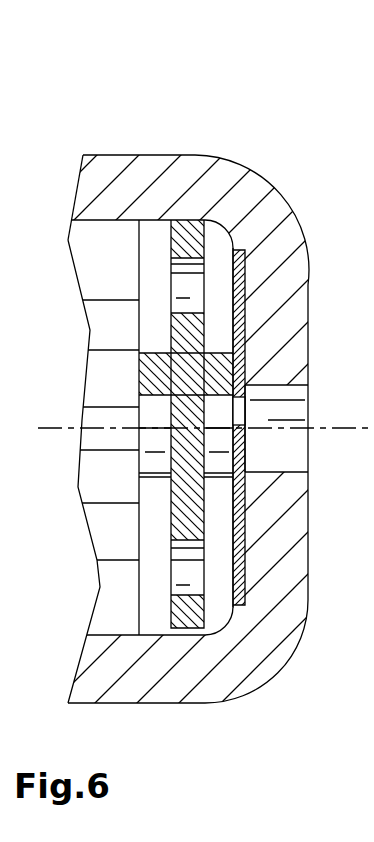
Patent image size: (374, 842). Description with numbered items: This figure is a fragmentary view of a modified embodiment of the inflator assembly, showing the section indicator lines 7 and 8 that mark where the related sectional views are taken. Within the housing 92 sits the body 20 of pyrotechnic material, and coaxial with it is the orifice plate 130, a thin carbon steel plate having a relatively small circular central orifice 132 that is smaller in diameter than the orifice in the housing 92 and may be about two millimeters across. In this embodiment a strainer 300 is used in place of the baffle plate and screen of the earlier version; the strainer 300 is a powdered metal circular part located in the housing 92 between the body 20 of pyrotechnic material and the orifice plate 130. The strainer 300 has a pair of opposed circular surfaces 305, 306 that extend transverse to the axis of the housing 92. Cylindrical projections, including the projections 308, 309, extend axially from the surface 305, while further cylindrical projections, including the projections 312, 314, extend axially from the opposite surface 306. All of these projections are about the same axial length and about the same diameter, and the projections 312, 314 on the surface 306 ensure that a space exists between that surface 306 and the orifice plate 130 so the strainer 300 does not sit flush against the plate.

The section line 7- 7 is at (135, 145).
The section line 8- 8 is at (232, 72).
The body of pyrotechnic material 20 is at (110, 328).
The housing 92 is at (250, 648).
The orifice plate 130 is at (243, 302).
The central orifice 132 is at (242, 437).
The strainer 300 is at (206, 237).
The circular surface 305 is at (111, 583).
The circular surface 306 is at (43, 587).
The projection 308 is at (160, 365).
The projection 309 is at (157, 460).
The projection 312 is at (238, 362).
The projection 314 is at (221, 459).